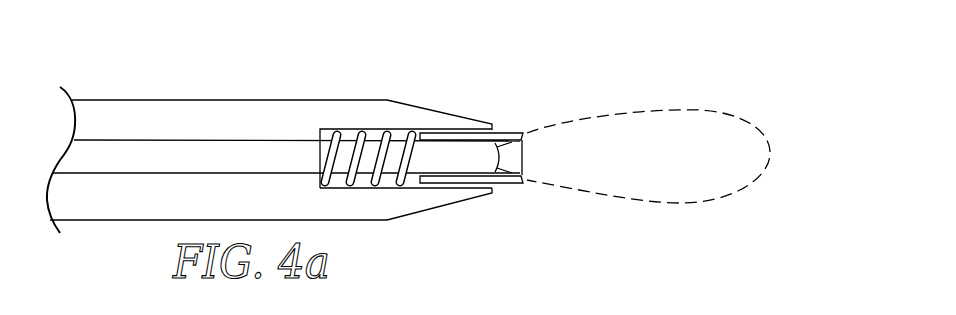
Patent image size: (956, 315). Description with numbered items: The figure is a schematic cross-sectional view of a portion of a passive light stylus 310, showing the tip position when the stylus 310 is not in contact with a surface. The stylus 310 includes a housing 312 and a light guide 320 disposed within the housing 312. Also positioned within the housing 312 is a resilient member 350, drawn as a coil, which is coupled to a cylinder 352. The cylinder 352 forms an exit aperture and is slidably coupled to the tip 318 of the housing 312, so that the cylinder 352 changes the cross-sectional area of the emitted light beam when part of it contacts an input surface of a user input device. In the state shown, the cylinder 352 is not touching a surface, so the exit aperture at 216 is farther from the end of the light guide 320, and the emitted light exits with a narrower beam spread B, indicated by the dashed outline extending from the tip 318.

The passive light stylus 310 is at (422, 58).
The housing 312 is at (168, 112).
The light guide 320 is at (277, 153).
The tip 318 is at (468, 218).
The resilient member 350 is at (379, 119).
The cylinder 352 is at (507, 186).
The distal opening 216 is at (525, 156).
The beam spread B is at (682, 172).